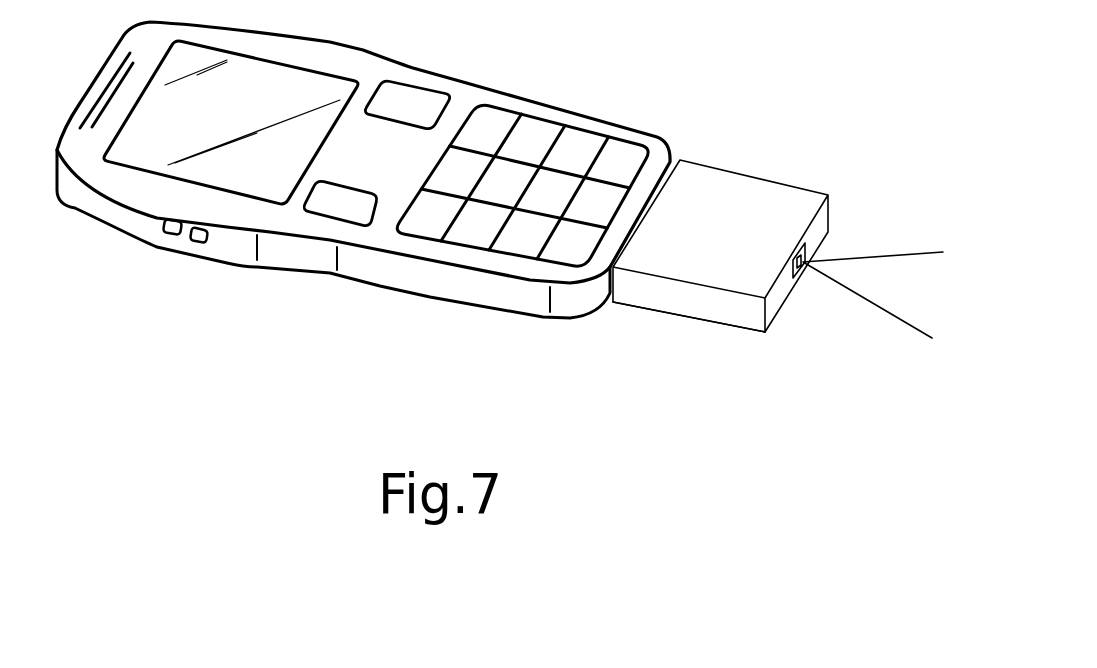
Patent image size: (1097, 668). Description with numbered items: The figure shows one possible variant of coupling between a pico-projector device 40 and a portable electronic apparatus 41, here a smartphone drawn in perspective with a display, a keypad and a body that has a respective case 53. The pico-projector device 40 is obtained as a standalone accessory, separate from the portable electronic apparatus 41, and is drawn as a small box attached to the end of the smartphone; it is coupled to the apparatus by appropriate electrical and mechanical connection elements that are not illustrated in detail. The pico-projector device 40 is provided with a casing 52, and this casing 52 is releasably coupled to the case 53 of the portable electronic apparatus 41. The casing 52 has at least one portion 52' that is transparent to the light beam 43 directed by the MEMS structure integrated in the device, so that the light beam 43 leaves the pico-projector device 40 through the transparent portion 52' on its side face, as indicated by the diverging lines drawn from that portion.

The pico-projector device 40 is at (742, 205).
The portable electronic apparatus 41 is at (155, 248).
The light beam 43 is at (860, 258).
The casing 52 is at (682, 332).
The transparent portion 52' is at (818, 304).
The case 53 is at (307, 257).